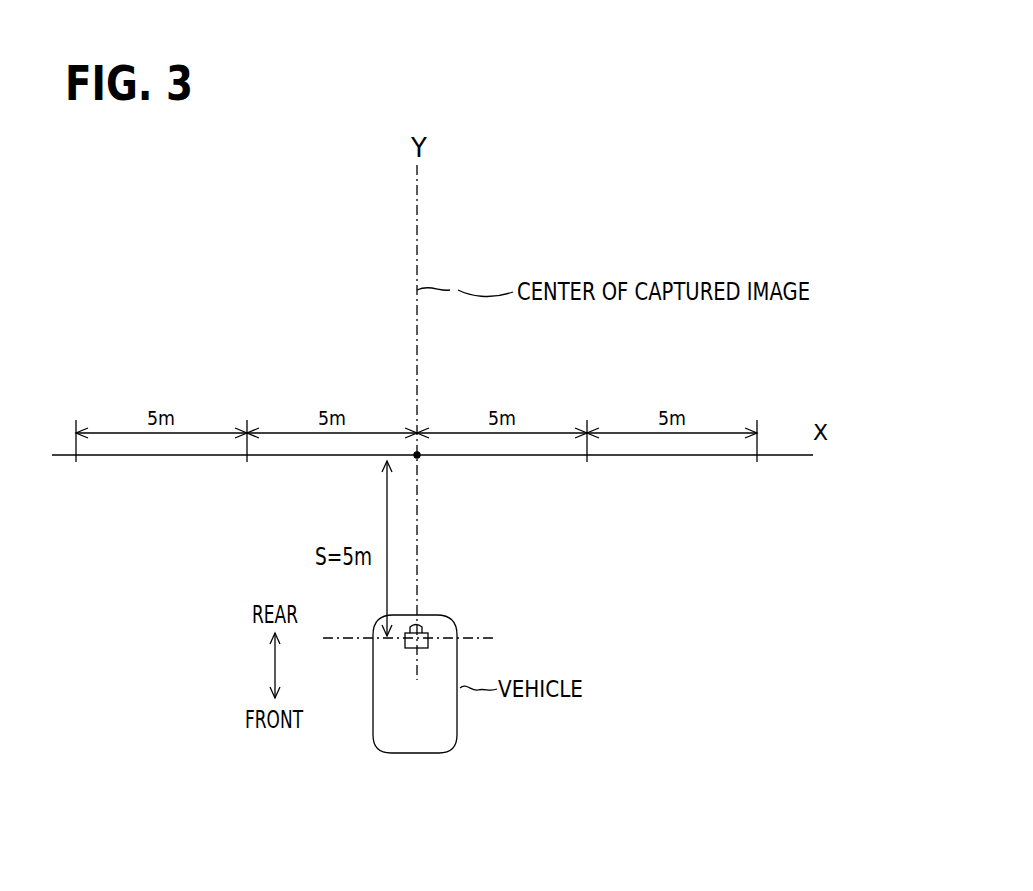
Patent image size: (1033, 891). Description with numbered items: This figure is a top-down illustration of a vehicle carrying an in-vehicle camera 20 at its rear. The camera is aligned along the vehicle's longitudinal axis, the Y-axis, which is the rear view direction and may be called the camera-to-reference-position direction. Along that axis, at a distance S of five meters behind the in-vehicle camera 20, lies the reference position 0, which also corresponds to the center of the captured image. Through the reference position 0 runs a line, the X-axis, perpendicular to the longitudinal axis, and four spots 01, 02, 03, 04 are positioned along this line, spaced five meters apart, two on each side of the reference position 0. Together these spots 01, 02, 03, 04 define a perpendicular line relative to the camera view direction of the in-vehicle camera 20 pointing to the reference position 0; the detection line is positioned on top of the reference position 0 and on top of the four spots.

The in-vehicle camera 20 is at (430, 633).
The reference position 0 is at (420, 460).
The spot 01 is at (78, 462).
The spot 02 is at (249, 462).
The spot 03 is at (589, 462).
The spot 04 is at (759, 462).